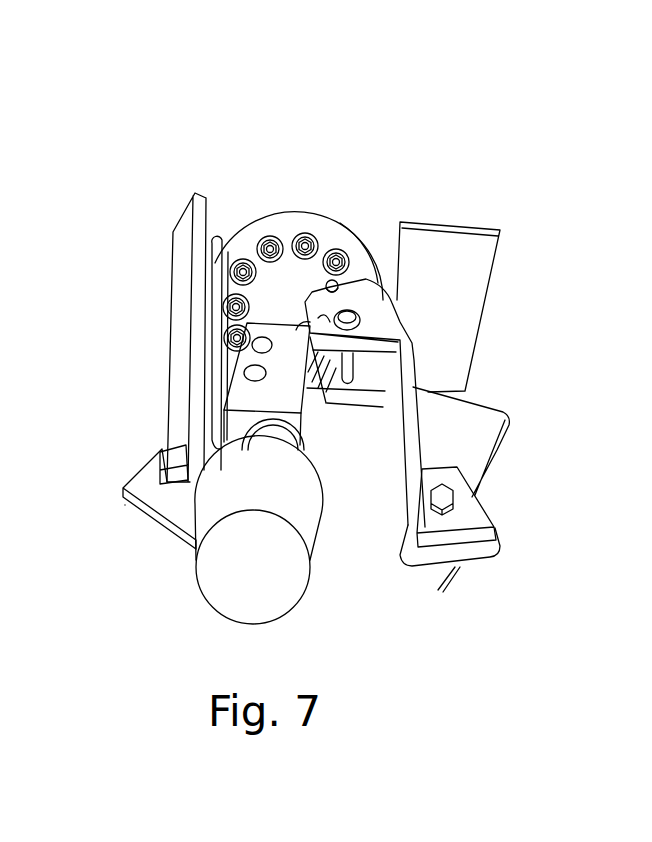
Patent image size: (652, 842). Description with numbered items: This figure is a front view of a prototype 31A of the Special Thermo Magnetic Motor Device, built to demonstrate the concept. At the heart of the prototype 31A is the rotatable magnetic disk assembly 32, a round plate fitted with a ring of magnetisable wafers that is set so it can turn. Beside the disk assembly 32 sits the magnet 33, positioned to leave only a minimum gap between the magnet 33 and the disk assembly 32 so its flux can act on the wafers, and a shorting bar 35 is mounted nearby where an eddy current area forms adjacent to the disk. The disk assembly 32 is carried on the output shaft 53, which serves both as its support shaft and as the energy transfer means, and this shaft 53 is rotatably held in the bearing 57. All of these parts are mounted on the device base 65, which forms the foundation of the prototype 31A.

The prototype of a Special Thermo Magnetic Motor Device 31A is at (195, 604).
The rotatable magnetic disk assembly 32 is at (260, 270).
The magnet 33 is at (365, 248).
The shorting bar 35 is at (465, 300).
The disk assembly support shaft and energy transfer means 53 is at (253, 563).
The bearing 57 is at (260, 397).
The Special Thermo Magnetic Motor Device base 65 is at (468, 460).